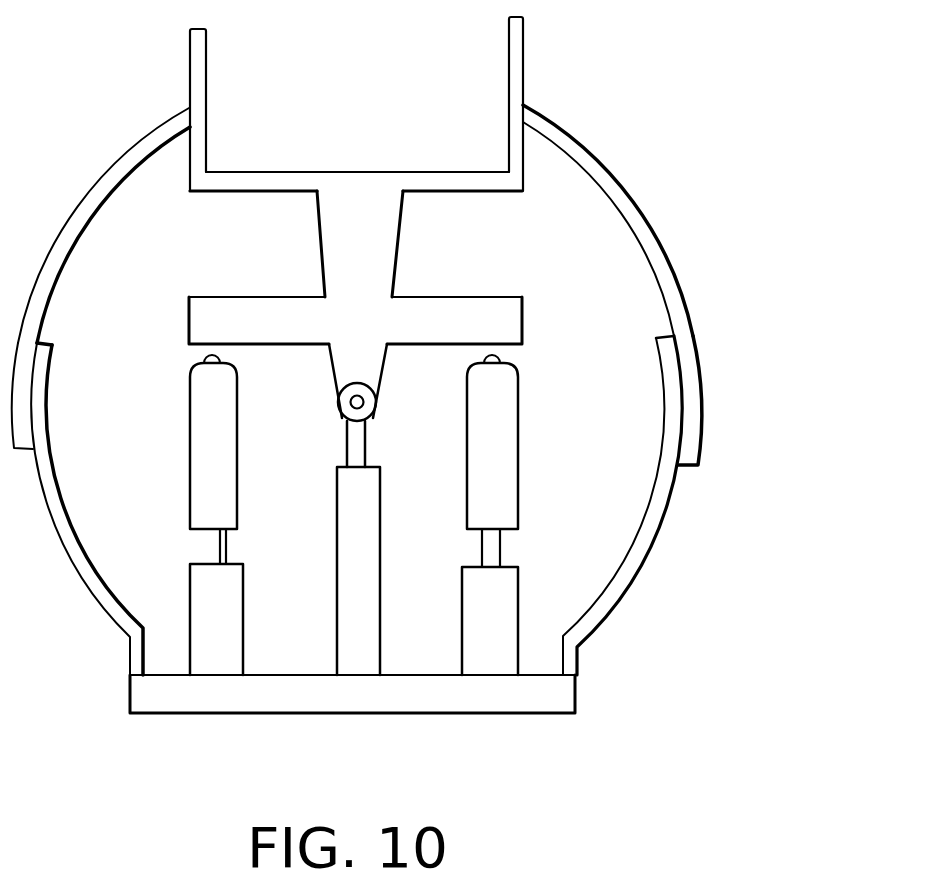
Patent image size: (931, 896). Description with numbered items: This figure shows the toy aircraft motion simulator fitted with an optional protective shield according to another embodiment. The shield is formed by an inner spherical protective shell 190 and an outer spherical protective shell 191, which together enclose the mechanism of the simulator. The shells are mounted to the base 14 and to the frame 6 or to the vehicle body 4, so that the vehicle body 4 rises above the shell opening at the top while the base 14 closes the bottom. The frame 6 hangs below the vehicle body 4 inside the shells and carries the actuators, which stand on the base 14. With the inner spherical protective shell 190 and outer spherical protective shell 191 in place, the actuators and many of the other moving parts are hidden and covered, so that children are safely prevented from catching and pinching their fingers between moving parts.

The vehicle body 4 is at (521, 82).
The frame 6 is at (390, 257).
The base 14 is at (187, 697).
The inner spherical protective shell 190 is at (650, 545).
The outer spherical protective shell 191 is at (697, 381).